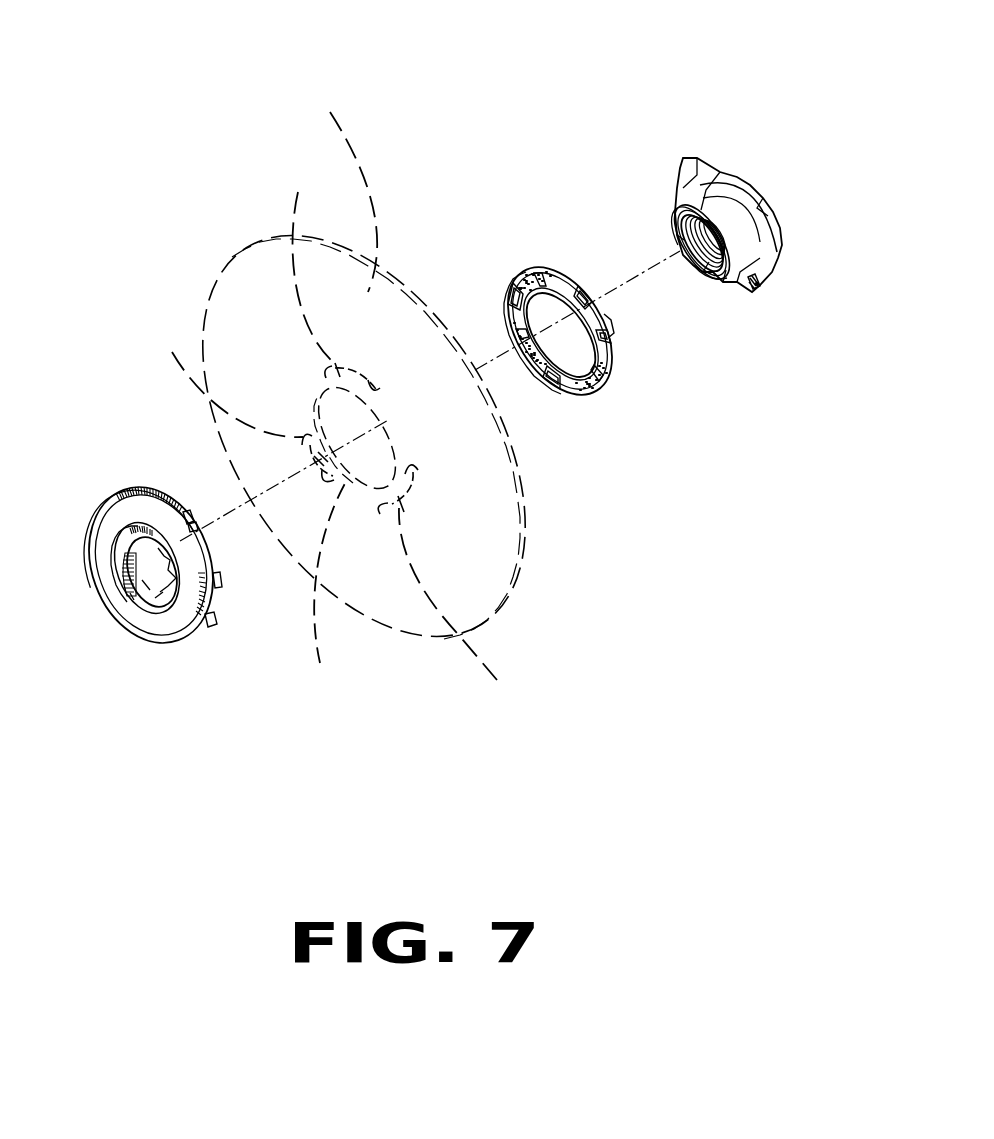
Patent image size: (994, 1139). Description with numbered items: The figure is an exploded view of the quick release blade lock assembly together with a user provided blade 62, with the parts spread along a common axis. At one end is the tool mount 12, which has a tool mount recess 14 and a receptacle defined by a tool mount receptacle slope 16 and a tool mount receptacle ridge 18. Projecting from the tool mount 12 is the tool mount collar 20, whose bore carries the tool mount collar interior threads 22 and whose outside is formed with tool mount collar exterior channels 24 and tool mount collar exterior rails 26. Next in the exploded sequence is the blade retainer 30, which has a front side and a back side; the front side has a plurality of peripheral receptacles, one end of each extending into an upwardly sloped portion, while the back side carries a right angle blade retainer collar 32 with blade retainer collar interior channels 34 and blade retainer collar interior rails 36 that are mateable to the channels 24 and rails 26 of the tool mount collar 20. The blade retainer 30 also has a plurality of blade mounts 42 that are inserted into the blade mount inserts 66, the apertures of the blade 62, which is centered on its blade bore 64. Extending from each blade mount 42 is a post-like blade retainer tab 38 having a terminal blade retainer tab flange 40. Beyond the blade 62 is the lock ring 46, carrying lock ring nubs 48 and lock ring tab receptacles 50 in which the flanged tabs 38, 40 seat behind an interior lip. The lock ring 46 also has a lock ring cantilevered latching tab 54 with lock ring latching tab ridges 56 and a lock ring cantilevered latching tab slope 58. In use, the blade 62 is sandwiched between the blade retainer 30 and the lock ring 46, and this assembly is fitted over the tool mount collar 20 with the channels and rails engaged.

The tool mount 12 is at (684, 185).
The tool mount recess 14 is at (671, 200).
The tool mount receptacle slope 16 is at (760, 284).
The tool mount receptacle ridge 18 is at (756, 289).
The tool mount collar 20 is at (709, 231).
The tool mount collar interior threads 22 is at (688, 264).
The tool mount collar exterior channel 24 is at (678, 214).
The tool mount collar exterior rail 26 is at (686, 235).
The blade retainer 30 is at (127, 490).
The blade retainer collar 32 is at (130, 527).
The blade retainer collar interior channel 34 is at (147, 527).
The blade retainer collar interior rail 36 is at (123, 547).
The blade retainer tab 38 is at (187, 525).
The blade retainer tab flange 40 is at (185, 513).
The blade mount 42 is at (158, 503).
The lock ring 46 is at (576, 294).
The lock ring nubs 48 is at (548, 268).
The lock ring tab receptacles 50 is at (558, 267).
The lock ring cantilevered latching tab 54 is at (513, 297).
The lock ring latching tab ridges 56 is at (603, 313).
The lock ring cantilevered latching tab slope 58 is at (587, 310).
The blade 62 is at (330, 112).
The blade bore 64 is at (320, 662).
The blade mount insert 66 is at (298, 192).